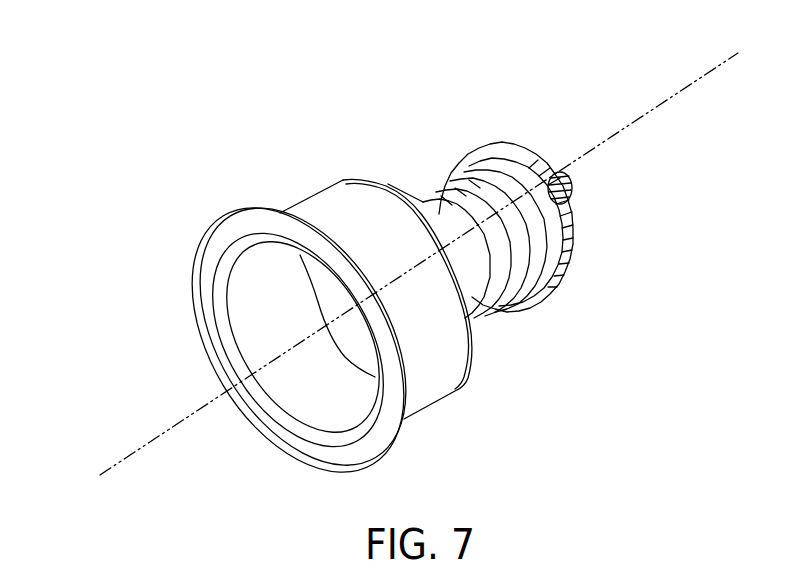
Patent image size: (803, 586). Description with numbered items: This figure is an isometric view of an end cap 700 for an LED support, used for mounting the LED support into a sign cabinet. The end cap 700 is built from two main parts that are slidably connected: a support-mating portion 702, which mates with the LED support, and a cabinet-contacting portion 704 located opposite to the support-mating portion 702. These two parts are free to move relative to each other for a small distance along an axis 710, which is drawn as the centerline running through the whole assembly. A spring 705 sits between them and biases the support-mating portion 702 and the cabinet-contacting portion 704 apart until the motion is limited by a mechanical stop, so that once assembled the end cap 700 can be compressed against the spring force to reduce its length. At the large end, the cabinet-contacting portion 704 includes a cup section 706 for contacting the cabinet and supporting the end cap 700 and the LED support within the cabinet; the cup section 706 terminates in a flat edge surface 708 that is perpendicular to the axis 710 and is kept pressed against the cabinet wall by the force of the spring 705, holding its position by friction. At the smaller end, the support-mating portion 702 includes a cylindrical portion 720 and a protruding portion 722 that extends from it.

The end cap 700 is at (586, 73).
The support-mating portion 702 is at (530, 134).
The cabinet-contacting portion 704 is at (212, 485).
The spring 705 is at (484, 330).
The cup section 706 is at (344, 409).
The flat edge surface 708 is at (197, 260).
The axis 710 is at (138, 449).
The cylindrical portion 720 is at (566, 282).
The protruding portion 722 is at (570, 182).